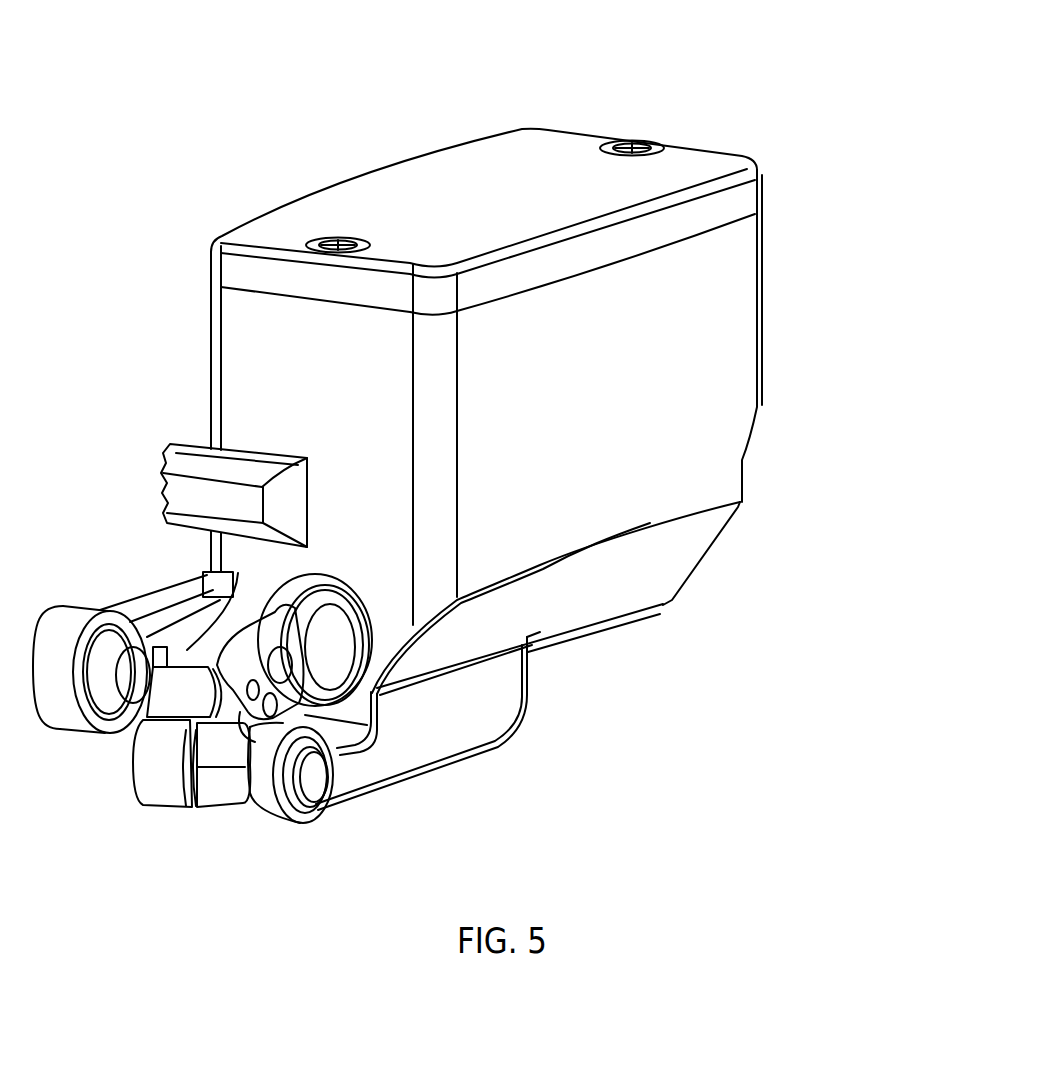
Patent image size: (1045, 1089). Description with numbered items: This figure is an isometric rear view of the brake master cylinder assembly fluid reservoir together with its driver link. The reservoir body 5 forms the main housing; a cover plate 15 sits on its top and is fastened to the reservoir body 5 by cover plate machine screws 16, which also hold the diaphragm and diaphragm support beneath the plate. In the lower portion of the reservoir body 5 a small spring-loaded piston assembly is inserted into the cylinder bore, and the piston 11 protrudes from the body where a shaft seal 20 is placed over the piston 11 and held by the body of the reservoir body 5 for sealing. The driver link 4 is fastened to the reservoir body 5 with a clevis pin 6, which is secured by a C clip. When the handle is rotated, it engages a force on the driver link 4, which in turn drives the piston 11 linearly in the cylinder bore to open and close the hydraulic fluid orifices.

The driver link 4 is at (220, 740).
The reservoir body 5 is at (690, 400).
The clevis pin 6 is at (315, 777).
The piston 11 is at (327, 652).
The cover plate 15 is at (740, 192).
The cover plate machine screw 16 is at (615, 135).
The shaft seal 20 is at (372, 643).